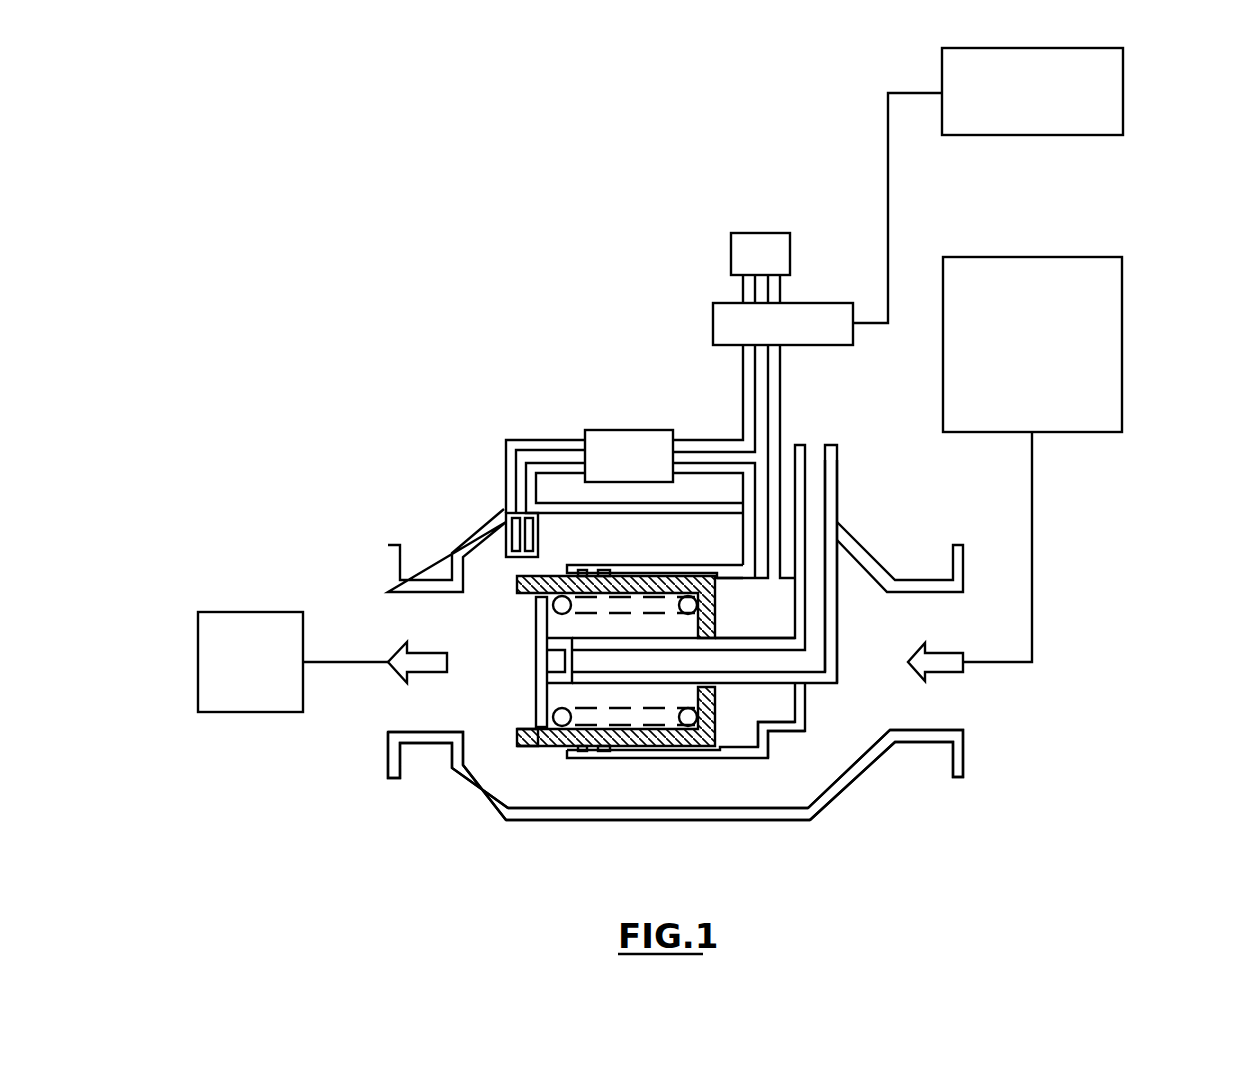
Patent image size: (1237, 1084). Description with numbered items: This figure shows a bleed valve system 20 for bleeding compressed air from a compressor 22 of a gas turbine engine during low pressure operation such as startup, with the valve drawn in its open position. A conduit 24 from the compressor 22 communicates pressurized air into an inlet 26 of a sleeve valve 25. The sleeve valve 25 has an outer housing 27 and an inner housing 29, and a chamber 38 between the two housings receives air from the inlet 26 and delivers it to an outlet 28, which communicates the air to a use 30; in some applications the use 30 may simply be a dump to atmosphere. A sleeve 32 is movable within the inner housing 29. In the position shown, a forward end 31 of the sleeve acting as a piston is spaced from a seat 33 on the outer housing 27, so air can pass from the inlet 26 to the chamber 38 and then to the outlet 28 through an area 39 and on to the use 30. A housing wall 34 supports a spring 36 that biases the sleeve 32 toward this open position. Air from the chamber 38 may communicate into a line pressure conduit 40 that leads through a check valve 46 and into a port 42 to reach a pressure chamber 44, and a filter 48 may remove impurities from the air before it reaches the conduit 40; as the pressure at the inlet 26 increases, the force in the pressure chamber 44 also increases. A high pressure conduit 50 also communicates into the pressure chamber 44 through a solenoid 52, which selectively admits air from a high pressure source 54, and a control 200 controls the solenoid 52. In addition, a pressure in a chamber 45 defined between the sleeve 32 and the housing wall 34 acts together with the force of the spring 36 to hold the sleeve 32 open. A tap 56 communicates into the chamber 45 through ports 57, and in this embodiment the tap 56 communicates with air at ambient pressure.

The bleed valve system 20 is at (548, 238).
The compressor 22 is at (1033, 265).
The conduit 24 is at (1035, 563).
The sleeve valve 25 is at (861, 809).
The inlet 26 is at (910, 623).
The outer housing 27 is at (800, 820).
The outlet 28 is at (430, 638).
The inner housing 29 is at (780, 747).
The use 30 is at (243, 632).
The forward end 31 is at (535, 733).
The sleeve 32 is at (543, 747).
The seat 33 is at (462, 748).
The housing wall 34 is at (536, 628).
The spring 36 is at (643, 610).
The chamber 38 is at (697, 787).
The area 39 is at (488, 585).
The line pressure conduit 40 is at (538, 453).
The port 42 is at (758, 457).
The pressure chamber 44 is at (776, 624).
The chamber 45 is at (626, 697).
The check valve 46 is at (620, 430).
The filter 48 is at (508, 538).
The high pressure conduit 50 is at (757, 396).
The solenoid 52 is at (817, 306).
The high pressure source 54 is at (757, 232).
The tap 56 is at (815, 470).
The ports 57 is at (572, 642).
The control 200 is at (1123, 97).